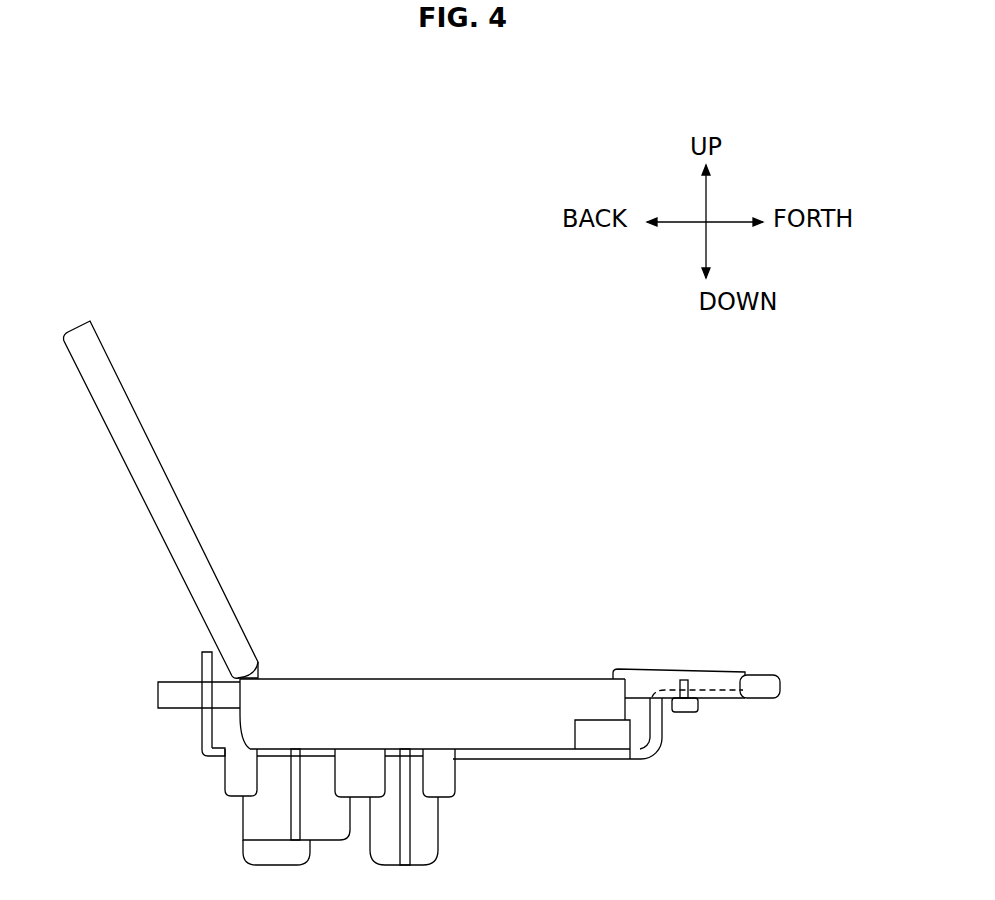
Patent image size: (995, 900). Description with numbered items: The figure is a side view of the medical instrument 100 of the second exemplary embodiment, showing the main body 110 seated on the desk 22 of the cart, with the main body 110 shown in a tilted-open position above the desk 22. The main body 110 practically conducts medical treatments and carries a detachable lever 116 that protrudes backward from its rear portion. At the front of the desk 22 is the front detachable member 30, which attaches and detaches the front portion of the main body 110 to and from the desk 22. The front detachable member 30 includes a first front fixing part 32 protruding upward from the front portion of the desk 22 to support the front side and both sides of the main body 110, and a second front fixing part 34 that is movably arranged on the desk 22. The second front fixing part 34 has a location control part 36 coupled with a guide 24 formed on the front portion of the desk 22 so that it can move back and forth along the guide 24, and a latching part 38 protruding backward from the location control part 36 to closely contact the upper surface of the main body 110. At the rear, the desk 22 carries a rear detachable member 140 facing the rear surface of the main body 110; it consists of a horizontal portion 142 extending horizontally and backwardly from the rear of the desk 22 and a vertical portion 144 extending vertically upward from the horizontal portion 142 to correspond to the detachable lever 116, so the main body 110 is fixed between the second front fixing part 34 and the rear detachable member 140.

The medical instrument 100 is at (530, 495).
The main body 110 is at (423, 672).
The detachable lever 116 is at (165, 690).
The rear detachable member 140 is at (190, 738).
The horizontal portion 142 is at (223, 757).
The vertical portion 144 is at (203, 720).
The desk 22 is at (525, 759).
The guide 24 is at (655, 720).
The front detachable member 30 is at (730, 850).
The first front fixing part 32 is at (601, 749).
The second front fixing part 34 is at (708, 712).
The location control part 36 is at (767, 670).
The latching part 38 is at (624, 672).